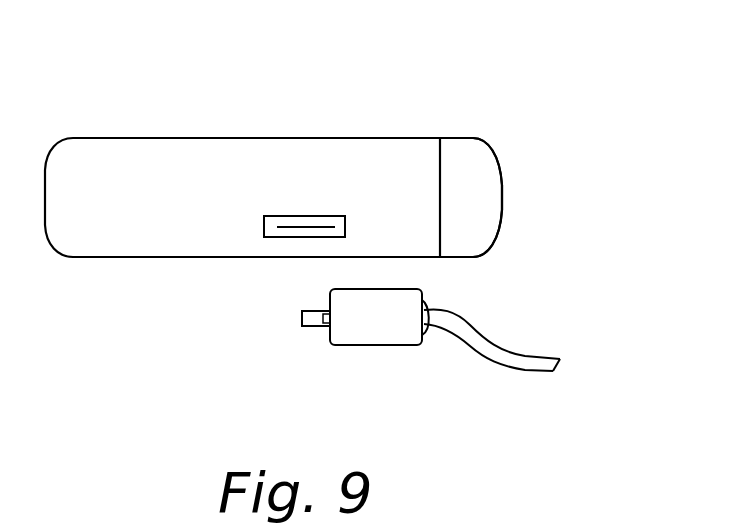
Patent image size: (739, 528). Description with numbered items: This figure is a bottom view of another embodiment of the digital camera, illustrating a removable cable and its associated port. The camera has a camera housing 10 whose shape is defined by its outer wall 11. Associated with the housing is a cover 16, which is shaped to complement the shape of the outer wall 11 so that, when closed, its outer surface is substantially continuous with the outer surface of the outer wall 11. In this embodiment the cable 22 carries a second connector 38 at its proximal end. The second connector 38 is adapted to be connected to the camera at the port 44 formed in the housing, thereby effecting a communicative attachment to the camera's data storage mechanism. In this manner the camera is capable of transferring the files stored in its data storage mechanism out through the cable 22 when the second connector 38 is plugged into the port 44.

The camera housing 10 is at (204, 103).
The outer wall 11 is at (342, 138).
The cover 16 is at (495, 160).
The cable 22 is at (495, 347).
The second connector 38 is at (388, 345).
The port 44 is at (306, 237).